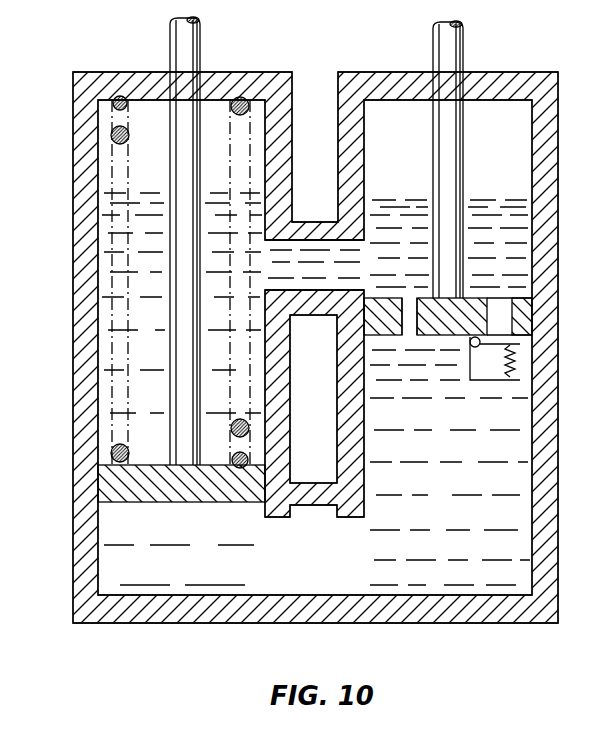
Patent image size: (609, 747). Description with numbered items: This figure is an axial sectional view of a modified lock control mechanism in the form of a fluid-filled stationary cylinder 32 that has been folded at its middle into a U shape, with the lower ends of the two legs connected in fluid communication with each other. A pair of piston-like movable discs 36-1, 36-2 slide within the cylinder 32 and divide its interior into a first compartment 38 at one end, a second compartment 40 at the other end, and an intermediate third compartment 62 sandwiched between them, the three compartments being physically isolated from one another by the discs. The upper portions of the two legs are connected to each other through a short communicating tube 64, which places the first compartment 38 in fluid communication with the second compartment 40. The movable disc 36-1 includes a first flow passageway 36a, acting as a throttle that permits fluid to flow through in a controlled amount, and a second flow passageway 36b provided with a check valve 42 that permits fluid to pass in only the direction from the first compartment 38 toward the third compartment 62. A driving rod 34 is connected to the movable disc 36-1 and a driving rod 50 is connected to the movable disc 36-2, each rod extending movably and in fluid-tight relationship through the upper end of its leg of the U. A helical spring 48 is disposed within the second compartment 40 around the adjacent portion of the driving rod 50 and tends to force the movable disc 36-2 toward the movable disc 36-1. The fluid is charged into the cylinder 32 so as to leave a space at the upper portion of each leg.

The stationary cylinder 32 is at (78, 246).
The driving rod 34 is at (452, 62).
The movable disc 36-1 is at (474, 300).
The movable disc 36-2 is at (124, 492).
The first flow passageway 36a is at (410, 330).
The second flow passageway 36b is at (503, 320).
The first compartment 38 is at (512, 143).
The second compartment 40 is at (102, 157).
The check valve 42 is at (520, 347).
The helical spring 48 is at (112, 450).
The driving rod 50 is at (172, 48).
The third compartment 62 is at (468, 582).
The communicating tube 64 is at (316, 250).